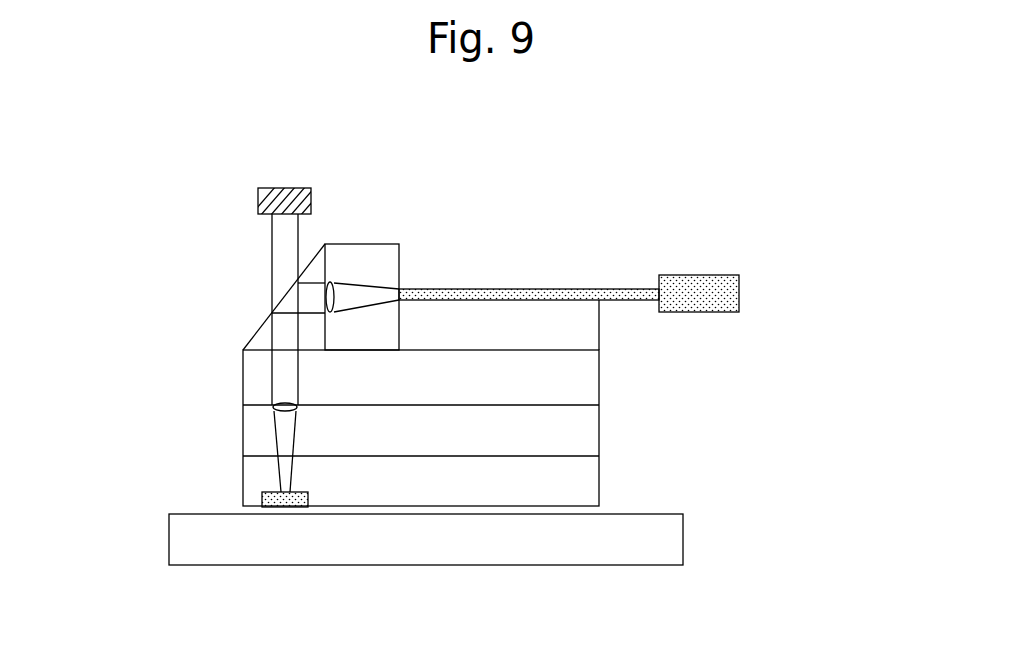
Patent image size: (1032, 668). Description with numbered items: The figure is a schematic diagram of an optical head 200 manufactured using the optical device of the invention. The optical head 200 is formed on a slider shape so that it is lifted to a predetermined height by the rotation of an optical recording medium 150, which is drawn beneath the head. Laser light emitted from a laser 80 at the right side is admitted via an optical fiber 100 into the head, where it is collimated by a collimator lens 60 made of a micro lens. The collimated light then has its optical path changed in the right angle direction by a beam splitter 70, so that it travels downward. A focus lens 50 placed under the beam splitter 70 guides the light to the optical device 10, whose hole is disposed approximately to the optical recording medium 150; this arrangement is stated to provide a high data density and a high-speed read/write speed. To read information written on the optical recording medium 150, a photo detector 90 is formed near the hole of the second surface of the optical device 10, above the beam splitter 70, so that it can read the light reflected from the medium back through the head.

The optical head 200 is at (403, 135).
The photo detector 90 is at (282, 158).
The beam splitter 70 is at (312, 262).
The collimator lens 60 is at (333, 289).
The optical fiber 100 is at (458, 289).
The laser 80 is at (700, 275).
The focus lens 50 is at (283, 405).
The optical device 10 is at (284, 508).
The optical recording medium 150 is at (683, 533).